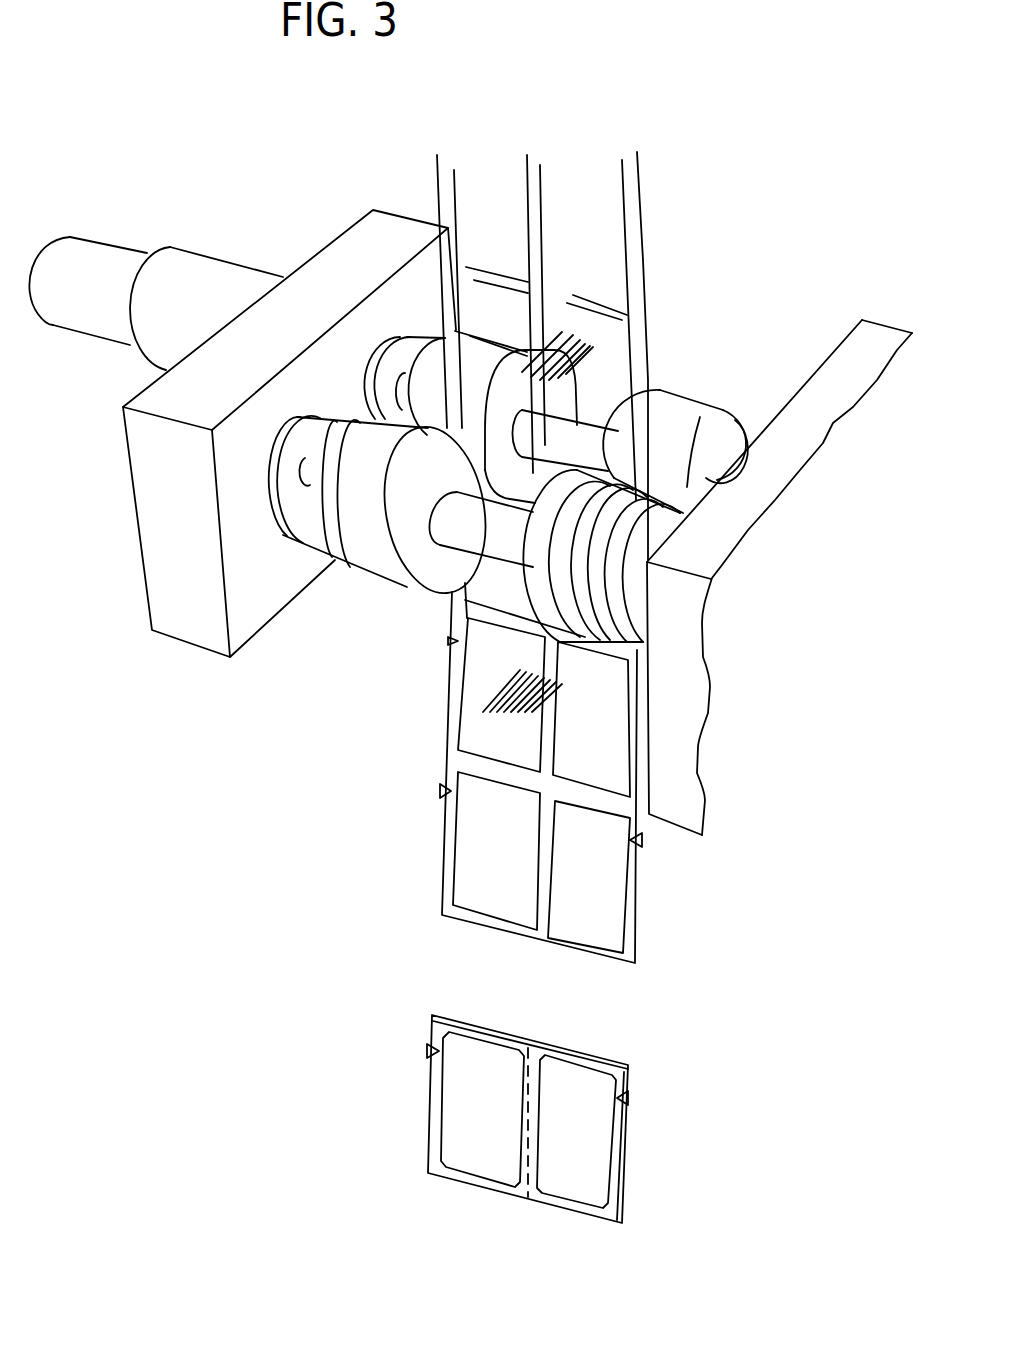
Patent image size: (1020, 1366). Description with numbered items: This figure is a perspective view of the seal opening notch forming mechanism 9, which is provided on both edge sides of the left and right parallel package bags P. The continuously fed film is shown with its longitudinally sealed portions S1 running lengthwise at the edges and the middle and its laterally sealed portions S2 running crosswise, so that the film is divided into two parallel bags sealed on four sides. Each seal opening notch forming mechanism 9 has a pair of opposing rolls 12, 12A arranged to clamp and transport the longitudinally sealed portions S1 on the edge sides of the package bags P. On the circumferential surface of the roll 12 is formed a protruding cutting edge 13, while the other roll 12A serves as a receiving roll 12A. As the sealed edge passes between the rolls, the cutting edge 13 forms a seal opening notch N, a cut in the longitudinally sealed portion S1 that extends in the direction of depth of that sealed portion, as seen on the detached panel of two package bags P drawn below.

The seal opening notch forming mechanism 9 is at (782, 353).
The roll 12 is at (360, 568).
The receiving roll 12A is at (428, 387).
The cutting edge 13 is at (353, 548).
The longitudinally sealed portion S1 is at (440, 172).
The laterally sealed portion S2 is at (588, 305).
The seal opening notch N is at (440, 791).
The package bag P is at (402, 1105).